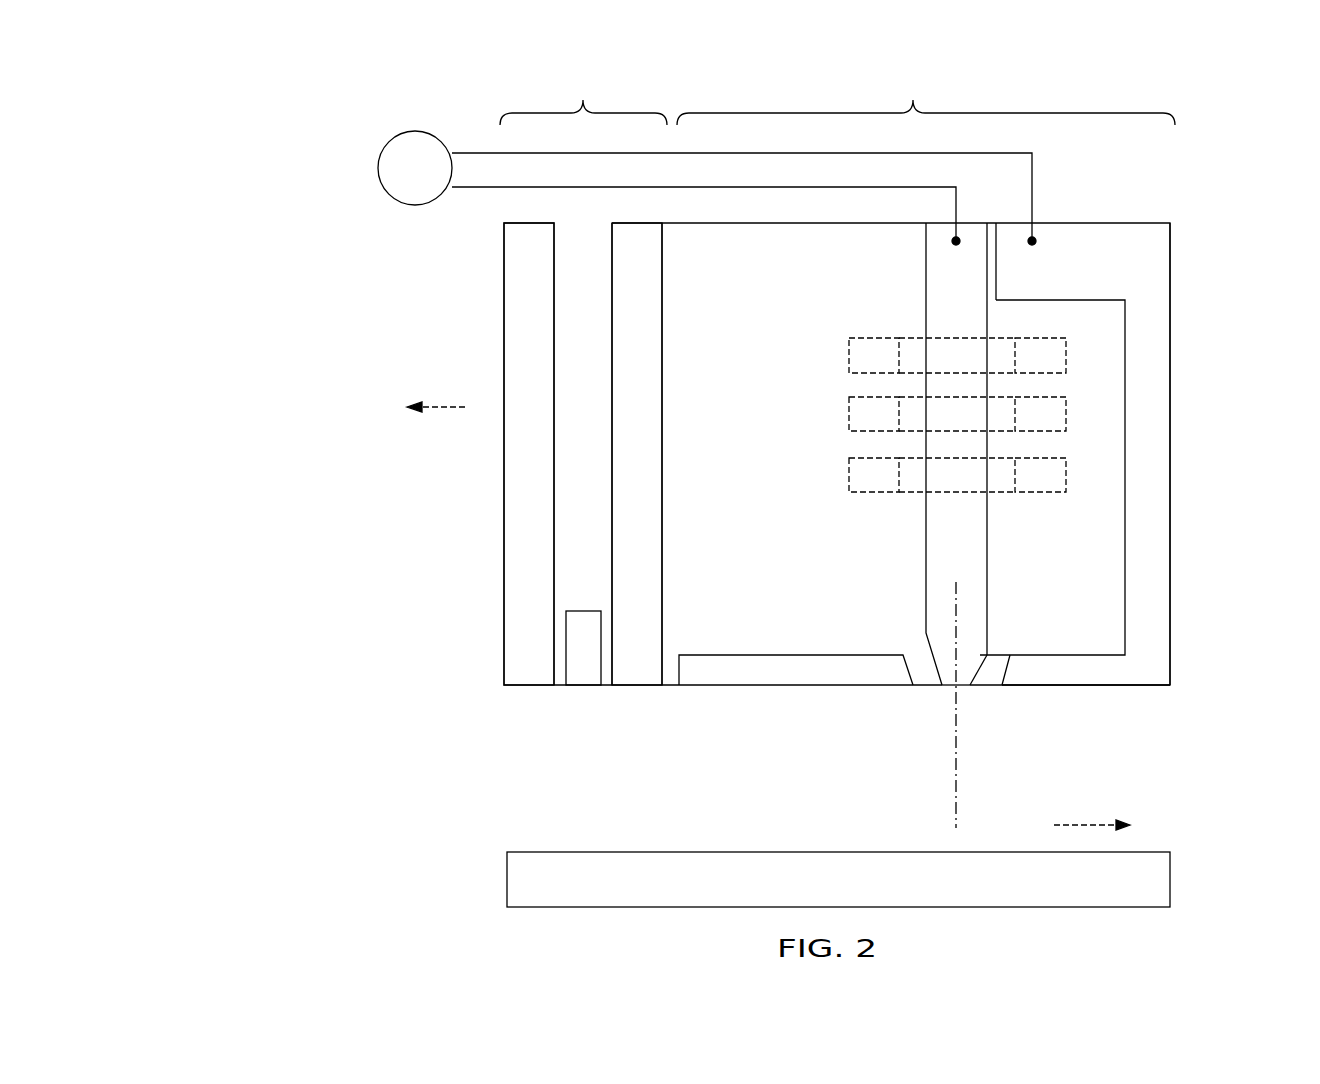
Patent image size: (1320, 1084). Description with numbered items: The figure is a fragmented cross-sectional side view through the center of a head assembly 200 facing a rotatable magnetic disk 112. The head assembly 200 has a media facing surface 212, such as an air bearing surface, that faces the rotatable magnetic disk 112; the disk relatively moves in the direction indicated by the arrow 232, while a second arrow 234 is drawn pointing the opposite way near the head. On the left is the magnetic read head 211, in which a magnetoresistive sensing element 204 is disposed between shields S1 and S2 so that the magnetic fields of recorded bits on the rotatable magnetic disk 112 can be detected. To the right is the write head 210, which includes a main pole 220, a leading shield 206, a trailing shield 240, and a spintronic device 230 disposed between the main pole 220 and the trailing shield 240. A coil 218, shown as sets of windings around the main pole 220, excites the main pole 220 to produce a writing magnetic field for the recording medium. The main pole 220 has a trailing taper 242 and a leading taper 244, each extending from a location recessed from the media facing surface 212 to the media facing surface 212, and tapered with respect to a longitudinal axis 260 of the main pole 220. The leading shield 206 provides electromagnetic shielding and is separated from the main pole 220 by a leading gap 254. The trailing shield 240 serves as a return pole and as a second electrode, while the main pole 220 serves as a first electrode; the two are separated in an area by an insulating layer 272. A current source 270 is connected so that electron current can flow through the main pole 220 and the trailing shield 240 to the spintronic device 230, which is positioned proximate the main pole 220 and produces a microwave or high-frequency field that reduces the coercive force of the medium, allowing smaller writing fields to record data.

The head assembly 200 is at (243, 97).
The write head 210 is at (926, 93).
The magnetic read head 211 is at (583, 93).
The current source 270 is at (378, 163).
The insulating layer 272 is at (992, 232).
The main pole 220 is at (973, 545).
The coil 218 is at (875, 497).
The up-track direction arrow 234 is at (448, 405).
The leading taper 244 is at (932, 662).
The leading gap 254 is at (927, 677).
The trailing taper 242 is at (980, 655).
The spintronic device 230 is at (992, 673).
The media facing surface 212 is at (1082, 688).
The trailing shield 240 is at (1145, 672).
The leading shield 206 is at (728, 688).
The sensing element 204 is at (578, 688).
The shield S1 is at (520, 688).
The shield S2 is at (633, 688).
The longitudinal axis 260 is at (955, 790).
The arrow 232 is at (1085, 825).
The rotatable magnetic disk 112 is at (1172, 877).